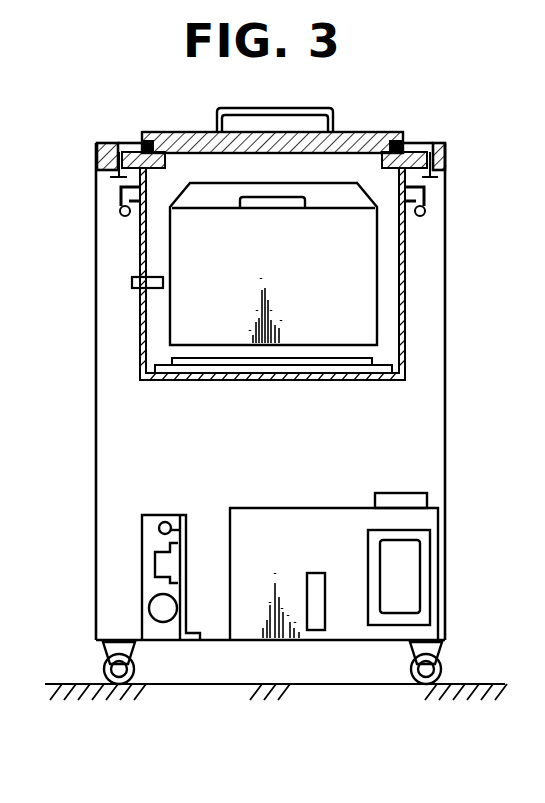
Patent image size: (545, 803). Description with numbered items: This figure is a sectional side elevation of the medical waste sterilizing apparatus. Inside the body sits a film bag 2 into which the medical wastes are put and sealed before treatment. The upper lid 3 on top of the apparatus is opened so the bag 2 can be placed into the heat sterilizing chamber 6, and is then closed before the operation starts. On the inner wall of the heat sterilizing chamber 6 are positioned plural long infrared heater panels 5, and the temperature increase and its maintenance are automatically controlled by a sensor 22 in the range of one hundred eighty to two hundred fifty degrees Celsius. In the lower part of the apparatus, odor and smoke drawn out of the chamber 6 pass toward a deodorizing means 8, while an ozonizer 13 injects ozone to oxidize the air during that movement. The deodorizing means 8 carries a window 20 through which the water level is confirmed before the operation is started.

The upper lid 3 is at (357, 133).
The film bag 2 is at (353, 272).
The heat sterilizing chamber 6 is at (390, 310).
The long infrared heater panels 5 is at (380, 358).
The sensor 22 is at (132, 283).
The ozonizer 13 is at (140, 592).
The deodorizing means 8 is at (423, 520).
The window 20 is at (314, 630).